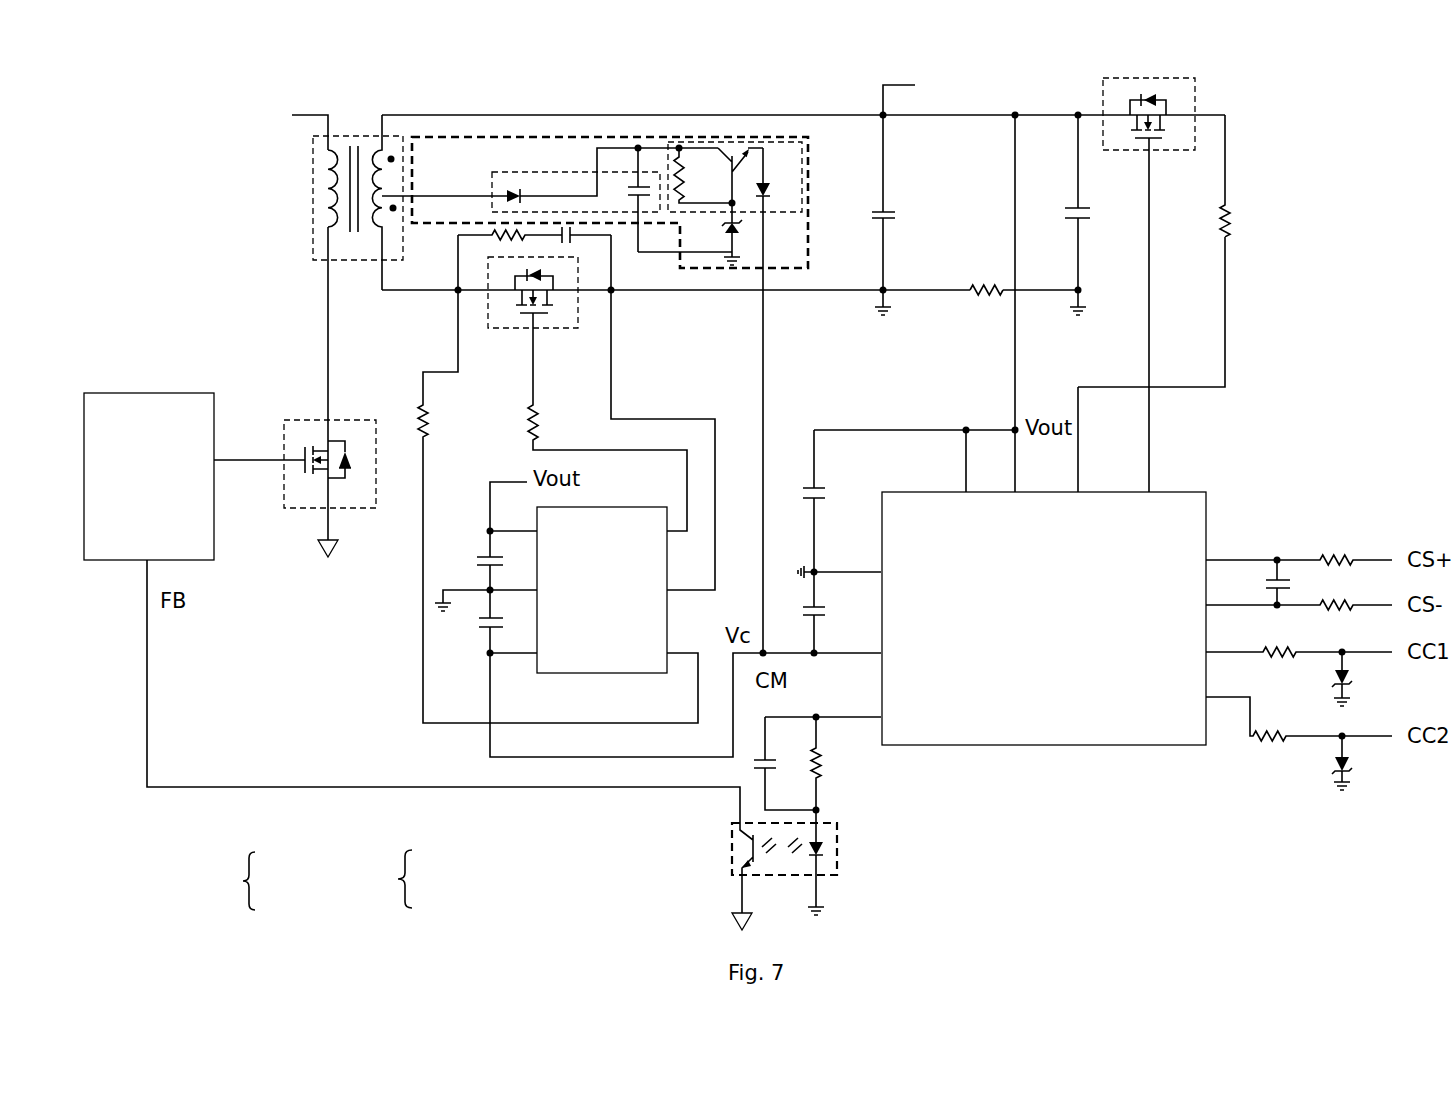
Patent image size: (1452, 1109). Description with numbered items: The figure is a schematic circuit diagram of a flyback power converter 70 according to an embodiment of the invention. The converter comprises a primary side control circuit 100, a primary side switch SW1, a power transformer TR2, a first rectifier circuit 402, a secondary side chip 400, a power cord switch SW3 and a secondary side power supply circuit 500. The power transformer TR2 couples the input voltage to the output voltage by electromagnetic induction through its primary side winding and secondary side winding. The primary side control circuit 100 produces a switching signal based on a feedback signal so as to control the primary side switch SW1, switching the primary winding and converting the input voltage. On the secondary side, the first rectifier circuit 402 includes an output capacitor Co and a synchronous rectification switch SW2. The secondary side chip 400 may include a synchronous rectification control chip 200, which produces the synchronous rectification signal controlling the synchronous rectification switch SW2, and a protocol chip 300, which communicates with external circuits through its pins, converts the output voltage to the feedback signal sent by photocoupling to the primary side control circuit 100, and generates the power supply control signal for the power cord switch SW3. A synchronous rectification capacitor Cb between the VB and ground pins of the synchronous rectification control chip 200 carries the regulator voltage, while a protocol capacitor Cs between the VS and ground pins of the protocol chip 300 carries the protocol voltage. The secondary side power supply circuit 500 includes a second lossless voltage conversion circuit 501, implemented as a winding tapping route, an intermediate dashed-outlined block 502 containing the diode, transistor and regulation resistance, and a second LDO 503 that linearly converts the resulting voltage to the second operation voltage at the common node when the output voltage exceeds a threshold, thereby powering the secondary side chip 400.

The flyback power converter 70 is at (173, 100).
The primary side control circuit 100 is at (165, 479).
The synchronous rectification control chip 200 is at (652, 654).
The protocol chip 300 is at (1070, 640).
The secondary side chip 400 is at (255, 884).
The first rectifier circuit 402 is at (413, 883).
The secondary side power supply circuit 500 is at (457, 169).
The second lossless voltage conversion circuit 501 is at (428, 199).
The rectifier regulator circuit 502 is at (585, 170).
The second LDO 503 is at (803, 195).
The power transformer TR2 is at (351, 273).
The primary side switch SW1 is at (285, 493).
The synchronous rectification switch SW2 is at (578, 305).
The power cord switch SW3 is at (1195, 97).
The output capacitor Co is at (902, 215).
The synchronous rectification capacitor Cb is at (489, 618).
The protocol capacitor Cs is at (829, 541).